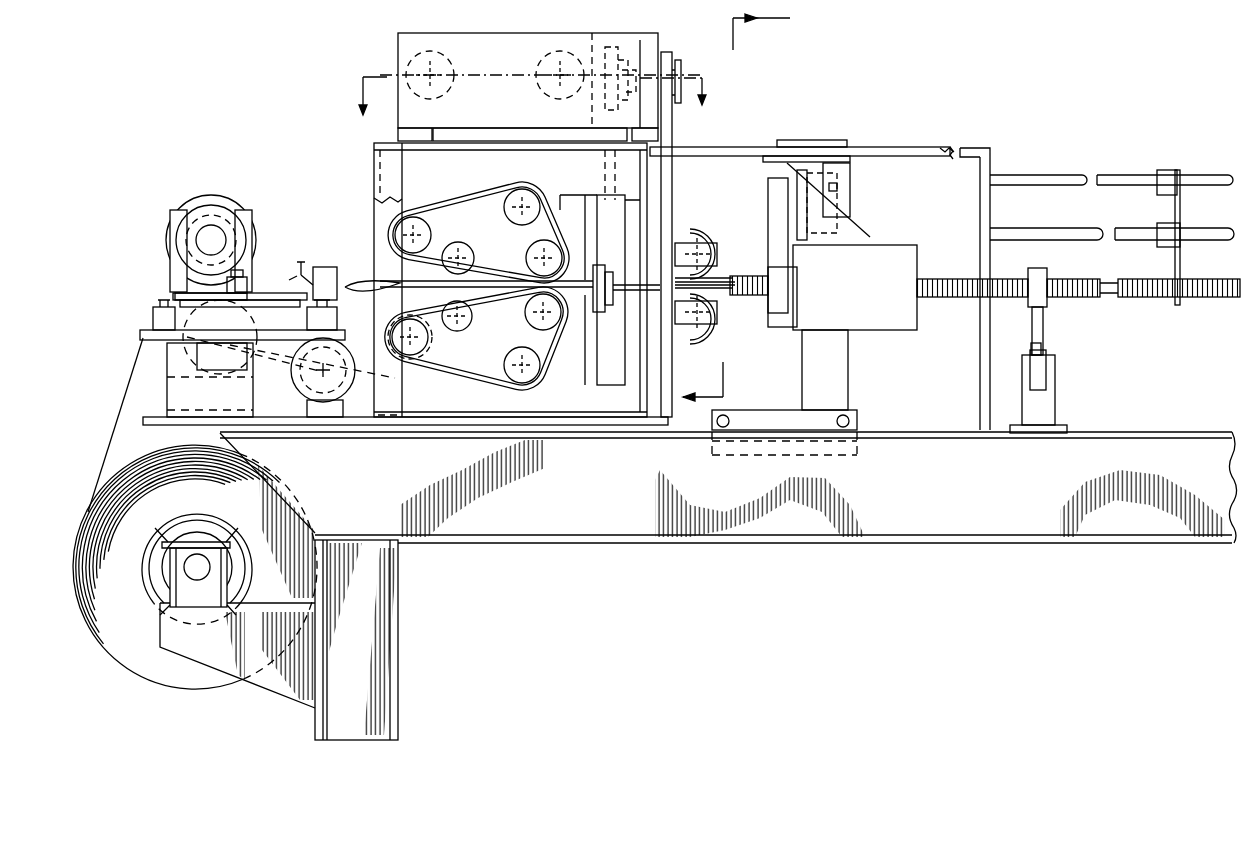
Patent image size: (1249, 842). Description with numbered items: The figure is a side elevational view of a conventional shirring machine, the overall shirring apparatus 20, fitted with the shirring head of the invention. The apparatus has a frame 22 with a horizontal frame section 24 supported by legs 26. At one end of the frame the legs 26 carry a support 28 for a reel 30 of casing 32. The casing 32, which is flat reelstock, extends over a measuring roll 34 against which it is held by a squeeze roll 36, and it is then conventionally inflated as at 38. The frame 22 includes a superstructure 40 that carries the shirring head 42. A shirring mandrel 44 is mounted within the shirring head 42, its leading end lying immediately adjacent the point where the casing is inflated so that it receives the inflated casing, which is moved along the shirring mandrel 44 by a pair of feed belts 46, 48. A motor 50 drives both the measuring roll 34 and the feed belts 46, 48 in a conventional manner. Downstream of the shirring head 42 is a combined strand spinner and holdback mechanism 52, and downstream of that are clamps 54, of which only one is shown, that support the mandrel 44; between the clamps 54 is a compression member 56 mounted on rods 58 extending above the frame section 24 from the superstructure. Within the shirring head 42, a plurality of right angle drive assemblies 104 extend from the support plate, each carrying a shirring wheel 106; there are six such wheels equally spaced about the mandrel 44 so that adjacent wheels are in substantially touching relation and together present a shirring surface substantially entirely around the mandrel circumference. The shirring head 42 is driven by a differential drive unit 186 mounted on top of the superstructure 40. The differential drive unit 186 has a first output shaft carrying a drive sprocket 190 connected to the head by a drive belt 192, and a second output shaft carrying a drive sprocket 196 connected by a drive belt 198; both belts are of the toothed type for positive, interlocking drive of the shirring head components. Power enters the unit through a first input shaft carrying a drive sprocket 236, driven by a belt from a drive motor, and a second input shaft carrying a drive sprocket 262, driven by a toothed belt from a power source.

The shirring apparatus 20 is at (464, 560).
The frame 22 is at (612, 548).
The horizontal frame section 24 is at (758, 522).
The legs 26 is at (385, 690).
The support 28 is at (270, 670).
The reel 30 is at (138, 662).
The casing 32 is at (118, 420).
The measuring roll 34 is at (250, 355).
The squeeze roll 36 is at (218, 205).
The inflation point 38 is at (325, 268).
The superstructure 40 is at (372, 196).
The shirring head 42 is at (688, 214).
The shirring mandrel 44 is at (254, 320).
The feed belt 46 is at (496, 296).
The feed belt 48 is at (490, 278).
The motor 50 is at (345, 400).
The combined strand spinner and holdback mechanism 52 is at (878, 325).
The clamps 54 is at (1044, 268).
The compression member 56 is at (1186, 205).
The rods 58 is at (1122, 228).
The right angle drive assemblies 104 is at (692, 300).
The shirring wheel 106 is at (735, 222).
The differential drive unit 186 is at (402, 28).
The drive sprocket 190 is at (695, 52).
The drive belt 192 is at (675, 135).
The drive sprocket 196 is at (623, 52).
The drive belt 198 is at (600, 210).
The drive sprocket 236 is at (410, 58).
The drive sprocket 262 is at (545, 60).